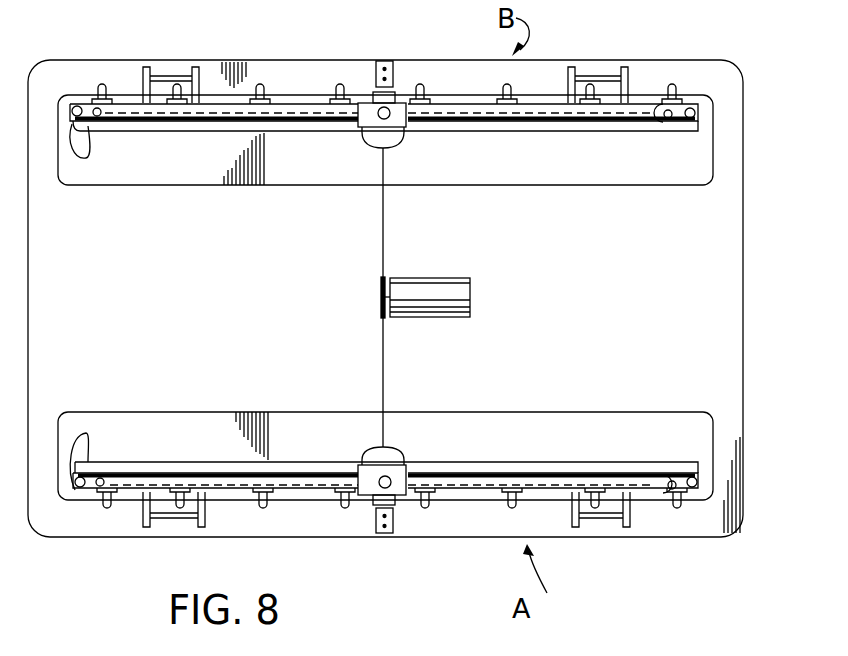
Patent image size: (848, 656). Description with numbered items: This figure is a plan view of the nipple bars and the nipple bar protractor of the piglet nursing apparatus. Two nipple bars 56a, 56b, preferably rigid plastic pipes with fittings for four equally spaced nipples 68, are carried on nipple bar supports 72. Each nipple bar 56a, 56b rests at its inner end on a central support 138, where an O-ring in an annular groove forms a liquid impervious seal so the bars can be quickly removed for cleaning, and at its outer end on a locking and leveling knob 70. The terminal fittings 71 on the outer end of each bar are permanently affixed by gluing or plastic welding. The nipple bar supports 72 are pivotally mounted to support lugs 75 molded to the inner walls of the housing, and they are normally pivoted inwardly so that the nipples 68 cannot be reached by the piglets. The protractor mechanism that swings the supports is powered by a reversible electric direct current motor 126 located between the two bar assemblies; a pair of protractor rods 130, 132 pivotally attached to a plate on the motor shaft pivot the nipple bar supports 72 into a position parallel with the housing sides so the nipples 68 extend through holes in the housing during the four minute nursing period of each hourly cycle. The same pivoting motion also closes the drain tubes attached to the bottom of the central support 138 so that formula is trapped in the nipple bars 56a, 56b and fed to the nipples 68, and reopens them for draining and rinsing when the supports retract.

The nipple bar 56a is at (172, 117).
The nipple bar 56b is at (580, 120).
The nipples 68 is at (423, 90).
The locking and leveling knob 70 is at (77, 106).
The terminal fitting 71 is at (97, 117).
The nipple bar support 72 is at (320, 128).
The support lug 75 is at (171, 68).
The reversible electric direct current motor 126 is at (460, 288).
The protractor rod 130 is at (383, 233).
The protractor rod 132 is at (385, 377).
The central support 138 is at (393, 118).